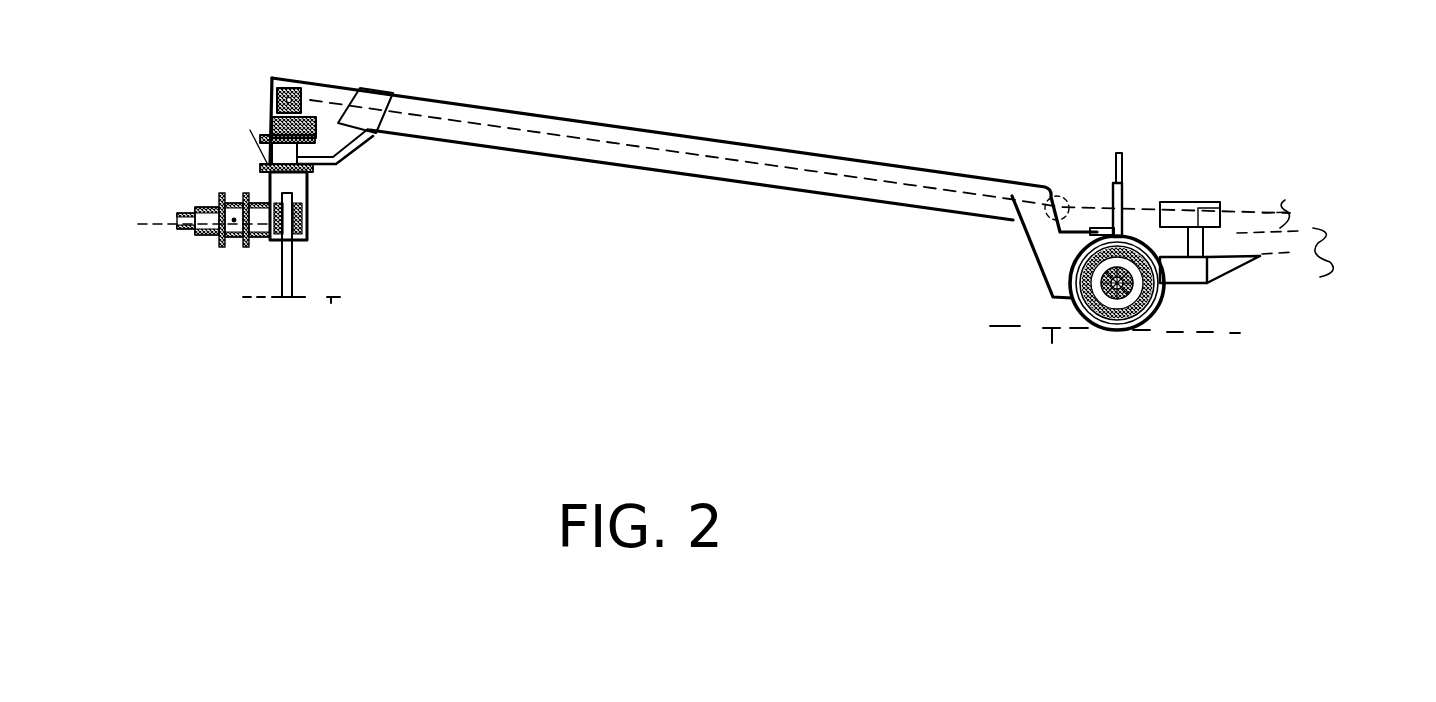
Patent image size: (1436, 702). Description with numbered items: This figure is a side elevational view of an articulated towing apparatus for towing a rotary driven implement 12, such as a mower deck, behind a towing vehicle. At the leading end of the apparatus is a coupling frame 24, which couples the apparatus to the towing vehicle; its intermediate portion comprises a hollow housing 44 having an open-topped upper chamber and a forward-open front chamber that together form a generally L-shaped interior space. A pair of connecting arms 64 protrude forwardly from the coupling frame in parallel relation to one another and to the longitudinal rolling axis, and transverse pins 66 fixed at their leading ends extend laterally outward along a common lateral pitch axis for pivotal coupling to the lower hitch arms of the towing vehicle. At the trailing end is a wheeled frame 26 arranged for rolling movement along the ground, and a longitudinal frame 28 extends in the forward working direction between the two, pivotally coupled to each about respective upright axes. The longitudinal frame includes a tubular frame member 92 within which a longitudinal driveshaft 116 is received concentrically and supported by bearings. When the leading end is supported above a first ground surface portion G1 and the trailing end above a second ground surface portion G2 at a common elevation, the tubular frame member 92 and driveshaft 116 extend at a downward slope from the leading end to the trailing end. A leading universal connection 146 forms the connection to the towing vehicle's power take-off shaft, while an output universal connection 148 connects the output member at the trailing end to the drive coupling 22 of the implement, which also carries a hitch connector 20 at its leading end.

The rotary driven implement 12 is at (1297, 252).
The hitch connector 20 is at (1313, 228).
The drive coupling 22 is at (1253, 207).
The coupling frame 24 is at (315, 370).
The wheeled frame 26 is at (1275, 473).
The longitudinal frame 28 is at (1057, 453).
The hollow housing 44 is at (310, 188).
The connecting arms 64 is at (197, 228).
The transverse pins 66 is at (180, 213).
The tubular frame member 92 is at (655, 130).
The longitudinal driveshaft 116 is at (736, 158).
The leading universal connection 146 is at (158, 224).
The output universal connection 148 is at (1263, 213).
The first ground surface portion G1 is at (331, 303).
The second ground surface portion G2 is at (1052, 343).